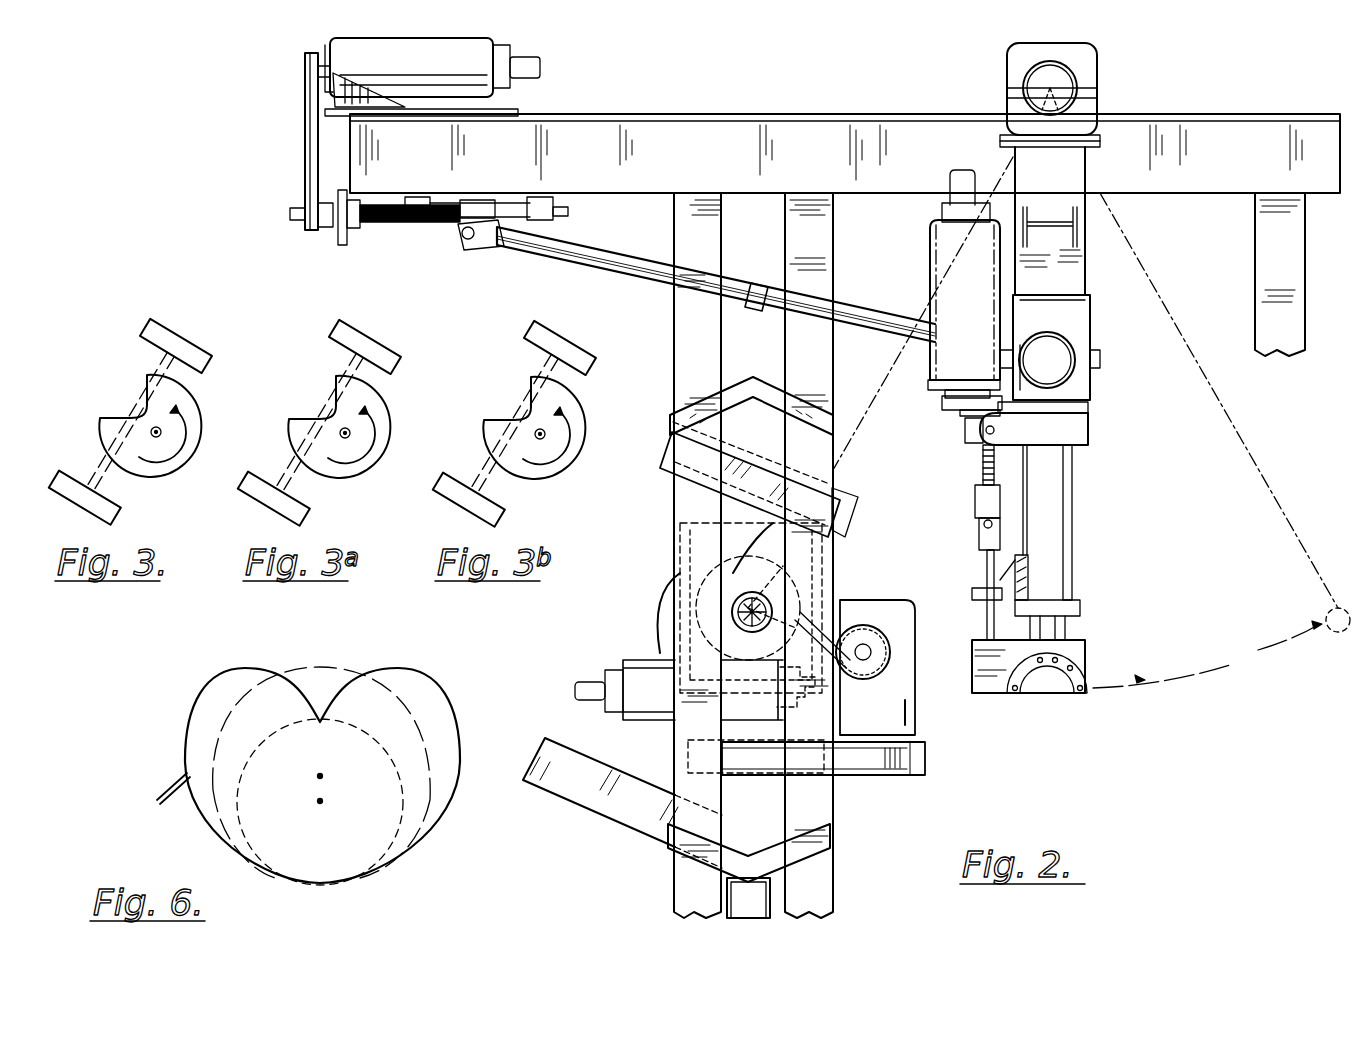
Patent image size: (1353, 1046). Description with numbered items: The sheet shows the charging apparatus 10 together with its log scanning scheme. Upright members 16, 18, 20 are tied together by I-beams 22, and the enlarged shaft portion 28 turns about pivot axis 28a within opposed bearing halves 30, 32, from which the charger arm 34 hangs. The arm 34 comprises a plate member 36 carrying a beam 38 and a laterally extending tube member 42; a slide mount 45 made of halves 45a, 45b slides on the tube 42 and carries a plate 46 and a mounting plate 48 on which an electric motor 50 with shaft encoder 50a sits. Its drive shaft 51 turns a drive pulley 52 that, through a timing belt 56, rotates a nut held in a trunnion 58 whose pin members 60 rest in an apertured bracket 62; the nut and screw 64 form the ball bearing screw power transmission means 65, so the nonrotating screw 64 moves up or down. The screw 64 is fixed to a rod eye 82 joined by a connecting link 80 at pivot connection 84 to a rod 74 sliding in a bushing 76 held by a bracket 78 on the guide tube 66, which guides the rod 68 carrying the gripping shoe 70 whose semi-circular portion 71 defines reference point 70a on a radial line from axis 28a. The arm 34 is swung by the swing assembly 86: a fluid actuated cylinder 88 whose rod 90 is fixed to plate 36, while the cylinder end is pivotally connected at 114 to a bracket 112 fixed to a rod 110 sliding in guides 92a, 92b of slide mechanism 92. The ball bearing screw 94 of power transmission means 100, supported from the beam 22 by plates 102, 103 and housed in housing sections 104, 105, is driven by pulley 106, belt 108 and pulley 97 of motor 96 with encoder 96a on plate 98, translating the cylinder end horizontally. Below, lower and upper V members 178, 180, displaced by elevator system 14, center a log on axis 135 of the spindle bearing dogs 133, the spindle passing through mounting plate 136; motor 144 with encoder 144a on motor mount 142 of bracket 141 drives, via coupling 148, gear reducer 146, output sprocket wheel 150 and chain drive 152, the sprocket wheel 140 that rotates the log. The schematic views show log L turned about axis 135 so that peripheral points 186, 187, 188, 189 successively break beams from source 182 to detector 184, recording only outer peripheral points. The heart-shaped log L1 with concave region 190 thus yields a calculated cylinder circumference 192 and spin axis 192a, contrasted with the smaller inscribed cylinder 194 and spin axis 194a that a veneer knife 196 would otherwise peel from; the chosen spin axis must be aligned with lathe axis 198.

In FIG. 2, the charging apparatus 10 is at (1220, 92).
In FIG. 2, the elevator system 14 is at (770, 901).
In FIG. 2, the upright member 16 is at (706, 342).
In FIG. 2, the upright member 18 is at (792, 349).
In FIG. 2, the upright member 20 is at (1255, 270).
In FIG. 2, the I-beam 22 is at (755, 140).
In FIG. 2, the enlarged shaft portion 28 is at (1035, 72).
In FIG. 2, the pivot axis 28a is at (1020, 84).
In FIG. 2, the bearing half 30 is at (1089, 60).
In FIG. 2, the bearing half 32 is at (1092, 100).
In FIG. 2, the charger arm 34 is at (1115, 440).
In FIG. 2, the plate member 36 is at (1088, 172).
In FIG. 2, the beam 38 is at (1051, 217).
In FIG. 2, the tube member 42 is at (1047, 360).
In FIG. 2, the slide mount 45 is at (1118, 360).
In FIG. 2, the slide mount half 45a is at (1078, 320).
In FIG. 2, the slide mount half 45b is at (1078, 390).
In FIG. 2, the plate 46 is at (1092, 412).
In FIG. 2, the mounting plate 48 is at (928, 386).
In FIG. 2, the electric motor 50 is at (940, 226).
In FIG. 2, the shaft encoder 50a is at (952, 170).
In FIG. 2, the drive shaft 51 is at (962, 390).
In FIG. 2, the drive pulley 52 is at (960, 413).
In FIG. 2, the timing belt 56 is at (942, 402).
In FIG. 2, the trunnion 58 is at (965, 438).
In FIG. 2, the pin members 60 is at (994, 430).
In FIG. 2, the apertured bracket 62 is at (1080, 443).
In FIG. 2, the screw 64 is at (982, 462).
In FIG. 2, the power transmission means 65 is at (960, 483).
In FIG. 2, the guide tube 66 is at (1066, 515).
In FIG. 2, the rod 68 is at (1070, 620).
In FIG. 2, the gripping shoe 70 is at (1067, 650).
In FIG. 2, the reference point 70a is at (1040, 698).
In FIG. 2, the semi-circular portion 71 is at (1066, 690).
In FIG. 2, the rod 74 is at (988, 568).
In FIG. 2, the bushing 76 is at (972, 598).
In FIG. 2, the bracket 78 is at (1025, 568).
In FIG. 2, the connecting link 80 is at (978, 544).
In FIG. 2, the rod eye 82 is at (976, 508).
In FIG. 2, the pivot connection 84 is at (984, 525).
In FIG. 2, the swing assembly 86 is at (650, 289).
In FIG. 2, the fluid actuated cylinder 88 is at (617, 262).
In FIG. 2, the extendible-retractable rod 90 is at (885, 323).
In FIG. 2, the slide mechanism 92 is at (452, 190).
In FIG. 2, the guide 92a is at (419, 197).
In FIG. 2, the guide 92b is at (545, 196).
In FIG. 2, the ball bearing screw 94 is at (432, 228).
In FIG. 2, the motor 96 is at (334, 44).
In FIG. 2, the shaft encoder 96a is at (548, 45).
In FIG. 2, the pulley 97 is at (305, 60).
In FIG. 2, the plate 98 is at (512, 112).
In FIG. 2, the power transmission means 100 is at (325, 272).
In FIG. 2, the supporting plate 102 is at (385, 201).
In FIG. 2, the supporting plate 103 is at (341, 244).
In FIG. 2, the housing section 104 is at (352, 230).
In FIG. 2, the housing section 105 is at (326, 232).
In FIG. 2, the pulley 106 is at (305, 205).
In FIG. 2, the belt 108 is at (305, 140).
In FIG. 2, the rod 110 is at (568, 212).
In FIG. 2, the bracket 112 is at (480, 200).
In FIG. 2, the pivotal connection 114 is at (466, 240).
In FIG. 2, the dogs 133 is at (751, 624).
In FIG. 2, the spindle axis 135 is at (750, 608).
In FIG. 3, the spindle axis 135 is at (156, 424).
In FIG. 3A, the spindle axis 135 is at (345, 424).
In FIG. 3B, the spindle axis 135 is at (540, 424).
In FIG. 2, the mounting plate 136 is at (778, 524).
In FIG. 2, the sprocket wheel 140 is at (790, 630).
In FIG. 2, the mounting bracket 141 is at (925, 761).
In FIG. 2, the motor mount 142 is at (777, 736).
In FIG. 2, the motor 144 is at (630, 663).
In FIG. 2, the shaft encoder 144a is at (588, 668).
In FIG. 2, the gear reducer 146 is at (908, 736).
In FIG. 2, the coupling 148 is at (823, 706).
In FIG. 2, the output sprocket wheel 150 is at (875, 633).
In FIG. 2, the chain drive 152 is at (845, 675).
In FIG. 2, the lower V members 178 is at (818, 826).
In FIG. 2, the upper V members 180 is at (730, 400).
In FIG. 2, the source 182 is at (765, 466).
In FIG. 3, the source 182 is at (143, 328).
In FIG. 3A, the source 182 is at (365, 347).
In FIG. 3B, the source 182 is at (530, 337).
In FIG. 2, the detector 184 is at (627, 818).
In FIG. 3, the detector 184 is at (113, 519).
In FIG. 3A, the detector 184 is at (303, 519).
In FIG. 3B, the detector 184 is at (498, 519).
In FIG. 3, the peripheral point 186 is at (97, 424).
In FIG. 3A, the peripheral point 187 is at (292, 434).
In FIG. 3A, the peripheral point 188 is at (313, 383).
In FIG. 3B, the peripheral point 189 is at (512, 384).
In FIG. 6, the concave region 190 is at (310, 713).
In FIG. 6, the cylinder circumference 192 is at (430, 798).
In FIG. 6, the spin axis 192a is at (342, 774).
In FIG. 6, the cylinder 194 is at (392, 848).
In FIG. 6, the spin axis 194a is at (322, 801).
In FIG. 6, the veneer knife 196 is at (170, 802).
In FIG. 2, the lathe axis 198 is at (1336, 637).
In FIG. 2, the log L is at (663, 599).
In FIG. 6, the heart-shaped log L1 is at (432, 680).